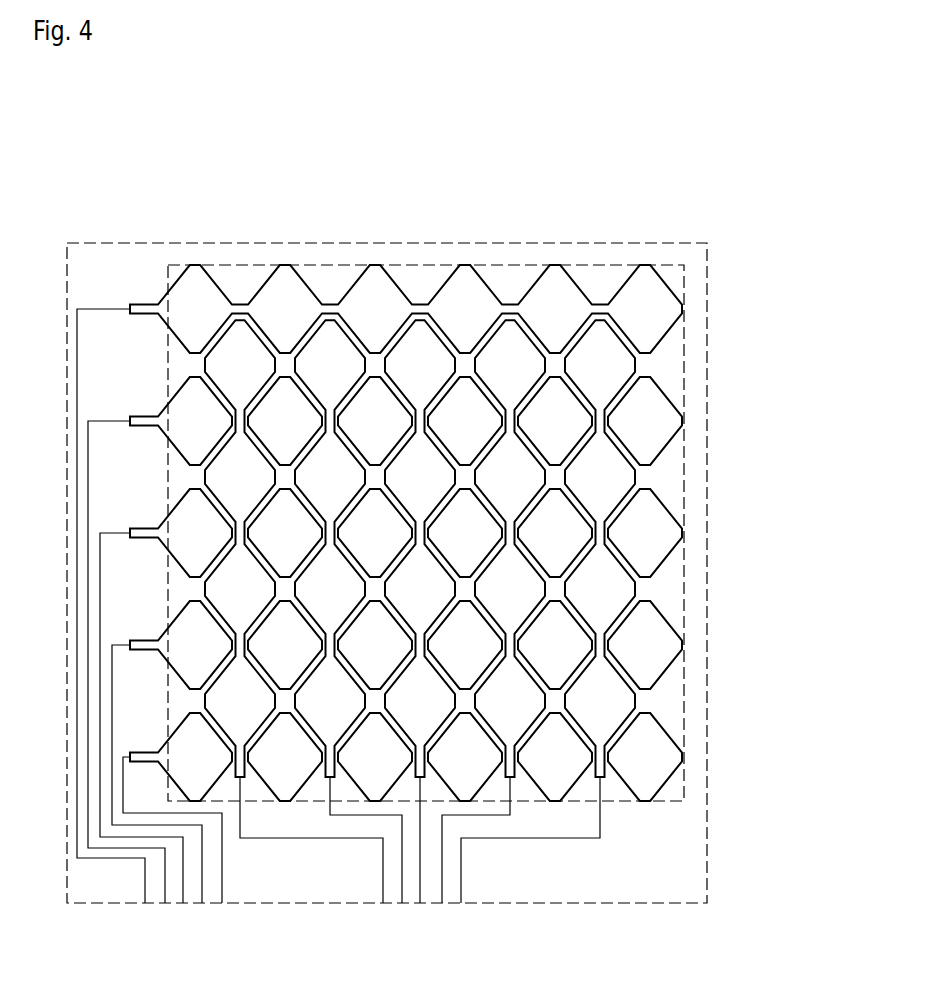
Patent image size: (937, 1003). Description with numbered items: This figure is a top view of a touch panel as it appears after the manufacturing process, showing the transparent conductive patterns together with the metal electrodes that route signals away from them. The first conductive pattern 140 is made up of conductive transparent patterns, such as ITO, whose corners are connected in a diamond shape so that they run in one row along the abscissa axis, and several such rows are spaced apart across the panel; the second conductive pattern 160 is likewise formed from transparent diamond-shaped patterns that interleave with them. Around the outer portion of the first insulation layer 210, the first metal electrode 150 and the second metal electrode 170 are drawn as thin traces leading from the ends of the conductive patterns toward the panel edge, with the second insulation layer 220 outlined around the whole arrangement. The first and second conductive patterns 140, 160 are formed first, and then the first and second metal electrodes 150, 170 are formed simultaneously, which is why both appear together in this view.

The first conductive pattern 140 is at (672, 756).
The second conductive pattern 160 is at (620, 700).
The first metal electrode 150 is at (222, 875).
The second metal electrode 170 is at (527, 838).
The first insulation layer 210 is at (597, 265).
The second insulation layer 220 is at (475, 243).